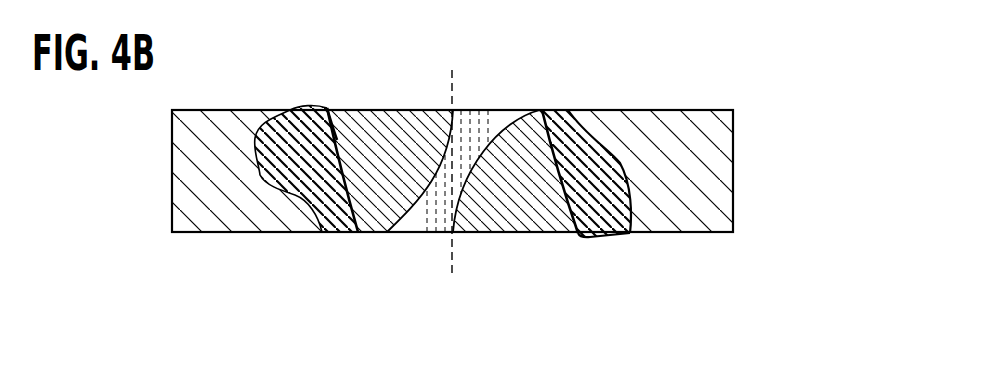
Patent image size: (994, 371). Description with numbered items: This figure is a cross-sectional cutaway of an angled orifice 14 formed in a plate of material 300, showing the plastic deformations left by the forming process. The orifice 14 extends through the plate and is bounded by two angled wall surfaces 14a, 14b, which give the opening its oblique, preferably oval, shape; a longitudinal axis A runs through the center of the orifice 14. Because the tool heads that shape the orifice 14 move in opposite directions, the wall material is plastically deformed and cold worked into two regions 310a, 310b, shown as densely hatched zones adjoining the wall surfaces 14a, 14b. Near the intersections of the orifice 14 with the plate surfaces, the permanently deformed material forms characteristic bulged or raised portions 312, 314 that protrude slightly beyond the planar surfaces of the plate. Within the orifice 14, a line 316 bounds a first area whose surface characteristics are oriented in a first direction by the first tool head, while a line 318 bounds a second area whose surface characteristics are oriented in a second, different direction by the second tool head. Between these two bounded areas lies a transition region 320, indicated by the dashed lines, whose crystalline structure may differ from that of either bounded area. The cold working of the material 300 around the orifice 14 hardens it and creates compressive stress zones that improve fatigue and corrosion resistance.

The material 300 is at (688, 160).
The angled orifice 14 is at (527, 100).
The angled wall surface 14a is at (334, 120).
The angled wall surface 14b is at (563, 192).
The plastically deformed region 310a is at (308, 177).
The plastically deformed region 310b is at (593, 172).
The bulged portion 312 is at (327, 108).
The bulged portion 314 is at (583, 236).
The line 316 is at (430, 190).
The line 318 is at (457, 177).
The transition region 320 is at (420, 220).
The longitudinal axis A is at (453, 83).